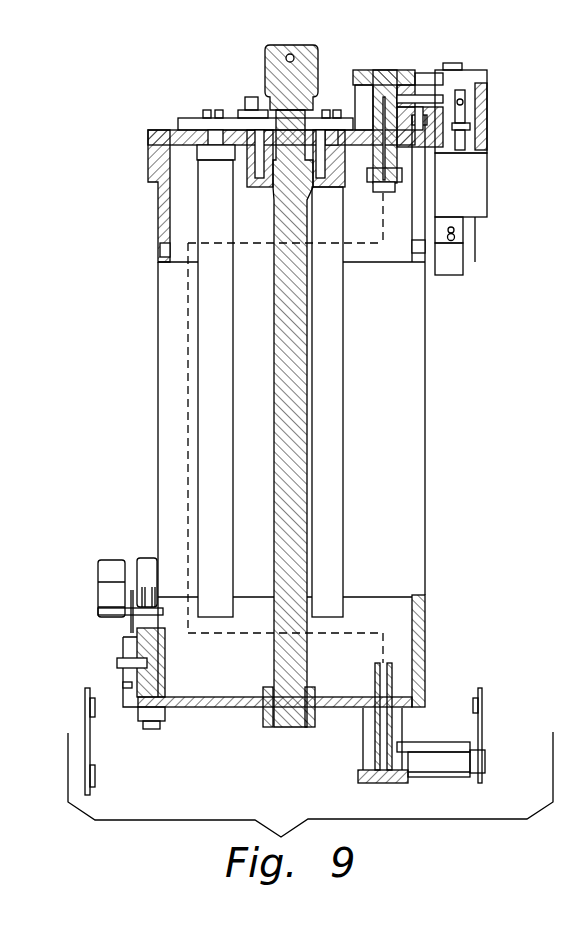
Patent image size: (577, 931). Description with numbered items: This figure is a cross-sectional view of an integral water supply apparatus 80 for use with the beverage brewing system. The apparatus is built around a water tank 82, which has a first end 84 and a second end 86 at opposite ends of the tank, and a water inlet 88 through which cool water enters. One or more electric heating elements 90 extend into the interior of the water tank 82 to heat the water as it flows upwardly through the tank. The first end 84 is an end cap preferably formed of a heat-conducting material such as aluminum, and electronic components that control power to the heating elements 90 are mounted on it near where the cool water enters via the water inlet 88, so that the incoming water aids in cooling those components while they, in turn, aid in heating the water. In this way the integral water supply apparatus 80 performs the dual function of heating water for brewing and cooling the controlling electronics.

The integral water supply apparatus 80 is at (2, 361).
The water tank 82 is at (425, 348).
The first end 84 is at (425, 632).
The second end 86 is at (160, 212).
The water inlet 88 is at (385, 728).
The electric heating element 90 is at (215, 427).